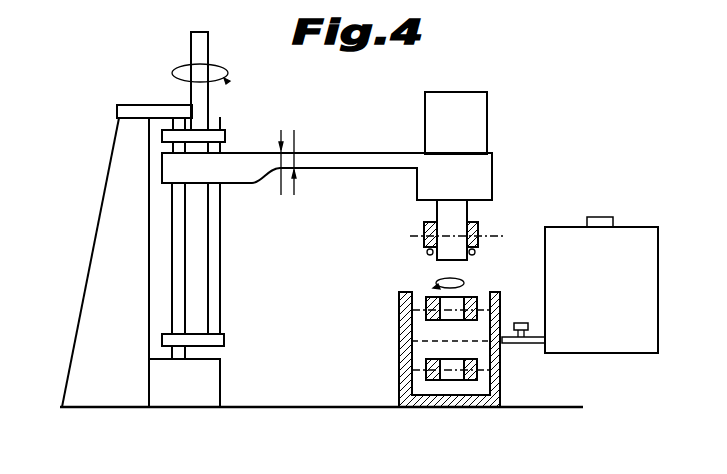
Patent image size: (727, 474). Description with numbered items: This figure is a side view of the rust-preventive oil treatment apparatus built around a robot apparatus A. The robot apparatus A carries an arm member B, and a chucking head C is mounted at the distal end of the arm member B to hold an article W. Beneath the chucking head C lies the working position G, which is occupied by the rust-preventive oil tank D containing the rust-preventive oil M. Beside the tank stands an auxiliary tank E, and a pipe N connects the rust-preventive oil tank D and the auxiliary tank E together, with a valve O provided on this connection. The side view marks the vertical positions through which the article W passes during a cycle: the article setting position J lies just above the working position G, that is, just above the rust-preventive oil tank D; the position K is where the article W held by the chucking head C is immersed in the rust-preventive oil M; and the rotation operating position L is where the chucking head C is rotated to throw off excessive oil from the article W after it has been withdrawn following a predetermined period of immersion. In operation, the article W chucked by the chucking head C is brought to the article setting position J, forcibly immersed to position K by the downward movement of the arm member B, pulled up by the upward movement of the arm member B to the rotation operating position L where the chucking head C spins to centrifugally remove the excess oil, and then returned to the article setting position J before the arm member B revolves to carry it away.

The robot apparatus A is at (165, 85).
The arm member B is at (318, 153).
The chucking head C is at (488, 210).
The rust-preventive oil tank D is at (419, 330).
The auxiliary tank E is at (635, 227).
The working position G is at (322, 277).
The article setting position J is at (410, 235).
The immersion position K is at (399, 370).
The rotation operating position L is at (399, 308).
The rust-preventive oil M is at (420, 350).
The pipe N is at (533, 344).
The valve O is at (522, 322).
The article W is at (480, 245).